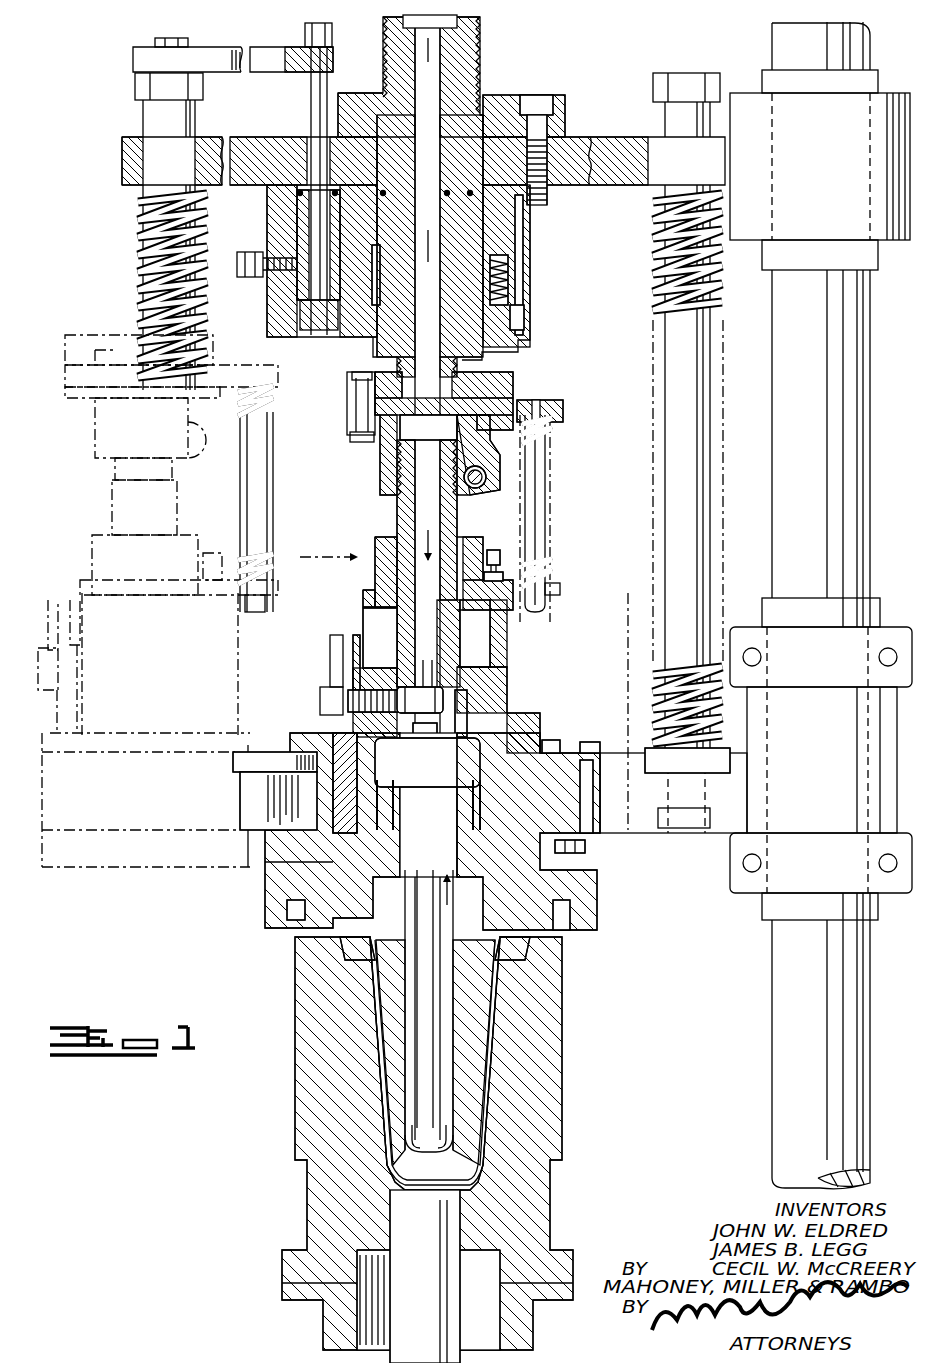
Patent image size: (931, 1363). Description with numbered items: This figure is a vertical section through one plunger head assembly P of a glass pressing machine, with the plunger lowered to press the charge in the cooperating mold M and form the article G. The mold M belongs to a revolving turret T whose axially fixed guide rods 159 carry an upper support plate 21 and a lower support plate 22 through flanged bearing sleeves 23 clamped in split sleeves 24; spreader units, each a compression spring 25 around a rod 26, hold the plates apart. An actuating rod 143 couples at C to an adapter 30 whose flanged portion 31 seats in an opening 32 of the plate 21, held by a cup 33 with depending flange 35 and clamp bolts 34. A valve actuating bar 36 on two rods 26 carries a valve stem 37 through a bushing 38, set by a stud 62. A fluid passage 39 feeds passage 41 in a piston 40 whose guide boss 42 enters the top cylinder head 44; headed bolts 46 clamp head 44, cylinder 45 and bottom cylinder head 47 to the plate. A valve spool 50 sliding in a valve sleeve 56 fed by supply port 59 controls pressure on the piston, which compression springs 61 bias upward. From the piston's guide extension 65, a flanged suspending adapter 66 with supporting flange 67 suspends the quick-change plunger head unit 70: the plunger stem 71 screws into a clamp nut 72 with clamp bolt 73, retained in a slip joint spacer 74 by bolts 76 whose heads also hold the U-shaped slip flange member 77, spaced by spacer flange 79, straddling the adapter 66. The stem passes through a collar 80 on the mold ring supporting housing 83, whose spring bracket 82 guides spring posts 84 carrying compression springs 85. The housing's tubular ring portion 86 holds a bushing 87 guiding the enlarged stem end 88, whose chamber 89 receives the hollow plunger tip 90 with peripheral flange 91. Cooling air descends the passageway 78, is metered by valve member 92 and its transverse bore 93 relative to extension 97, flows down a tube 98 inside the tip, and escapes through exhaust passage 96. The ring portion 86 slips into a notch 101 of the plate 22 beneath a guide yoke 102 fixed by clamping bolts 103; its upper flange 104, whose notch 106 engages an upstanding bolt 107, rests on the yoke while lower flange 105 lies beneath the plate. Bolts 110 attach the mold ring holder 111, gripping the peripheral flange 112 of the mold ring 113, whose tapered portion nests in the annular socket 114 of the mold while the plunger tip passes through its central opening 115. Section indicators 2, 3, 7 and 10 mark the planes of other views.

The upper support plate 21 is at (242, 142).
The lower support plate 22 is at (657, 827).
The flanged bearing sleeve 23 is at (878, 82).
The split sleeve 24 is at (748, 102).
The compression spring 25 is at (138, 242).
The rod 26 is at (152, 130).
The adapter 30 is at (400, 62).
The flanged portion 31 is at (340, 128).
The opening 32 is at (515, 201).
The cup 33 is at (374, 93).
The clamp bolts 34 is at (535, 100).
The depending flange 35 is at (566, 120).
The valve actuating bar 36 is at (232, 62).
The valve stem 37 is at (311, 100).
The bushing 38 is at (305, 142).
The central fluid passage 39 is at (418, 52).
The piston 40 is at (466, 246).
The passage 41 is at (522, 257).
The central guide boss 42 is at (494, 234).
The top cylinder head 44 is at (452, 213).
The cylinder 45 is at (525, 283).
The headed bolts 46 is at (520, 341).
The bottom cylinder head 47 is at (527, 319).
The valve spool 50 is at (287, 224).
The valve sleeve 56 is at (332, 246).
The fluid supply port 59 is at (252, 278).
The compression springs 61 is at (486, 297).
The stud 62 is at (300, 52).
The central depending guide extension 65 is at (396, 338).
The flanged suspending adapter 66 is at (377, 364).
The supporting flange 67 is at (475, 394).
The plunger head unit 70 is at (375, 496).
The plunger stem 71 is at (397, 521).
The clamp nut 72 is at (382, 466).
The clamp bolt 73 is at (482, 471).
The slip joint spacer 74 is at (349, 420).
The removable bolts 76 is at (351, 395).
The slip flange member 77 is at (514, 381).
The central fluid passageway 78 is at (435, 500).
The spacer flange 79 is at (504, 554).
The collar 80 is at (378, 555).
The spring bracket 82 is at (561, 590).
The mold ring supporting housing 83 is at (372, 601).
The spring posts 84 is at (541, 509).
The compression springs 85 is at (554, 430).
The tubular guide and ring portion 86 is at (322, 803).
The bushing 87 is at (516, 758).
The lower enlarged cylindrical end 88 is at (510, 679).
The downwardly opening chamber 89 is at (427, 805).
The hollow plunger tip 90 is at (386, 984).
The peripheral flange 91 is at (358, 881).
The adjustable valve member 92 is at (446, 685).
The transverse bore 93 is at (420, 723).
The exhaust passage 96 is at (512, 706).
The extension 97 is at (425, 676).
The tube 98 is at (436, 1014).
The radially opening notch 101 is at (262, 788).
The guide yoke 102 is at (273, 752).
The clamping bolts 103 is at (613, 756).
The upper flange 104 is at (298, 740).
The lower flange 105 is at (596, 868).
The notch 106 is at (558, 740).
The upstanding bolt 107 is at (588, 742).
The bolts 110 is at (585, 848).
The mold ring holder 111 is at (598, 910).
The peripheral flange 112 is at (580, 926).
The mold ring 113 is at (346, 949).
The tapered annular socket 114 is at (512, 955).
The central opening 115 is at (486, 961).
The actuating rod 143 is at (480, 44).
The guide rods 159 is at (772, 1016).
The coupling C is at (485, 90).
The plunger head assembly P is at (556, 469).
The revolving turret T is at (876, 352).
The article G is at (378, 1060).
The mold M is at (550, 1084).
The section line 2 is at (75, 10).
The section line 3 is at (610, 197).
The section line 7 is at (300, 727).
The section line 10 is at (37, 902).